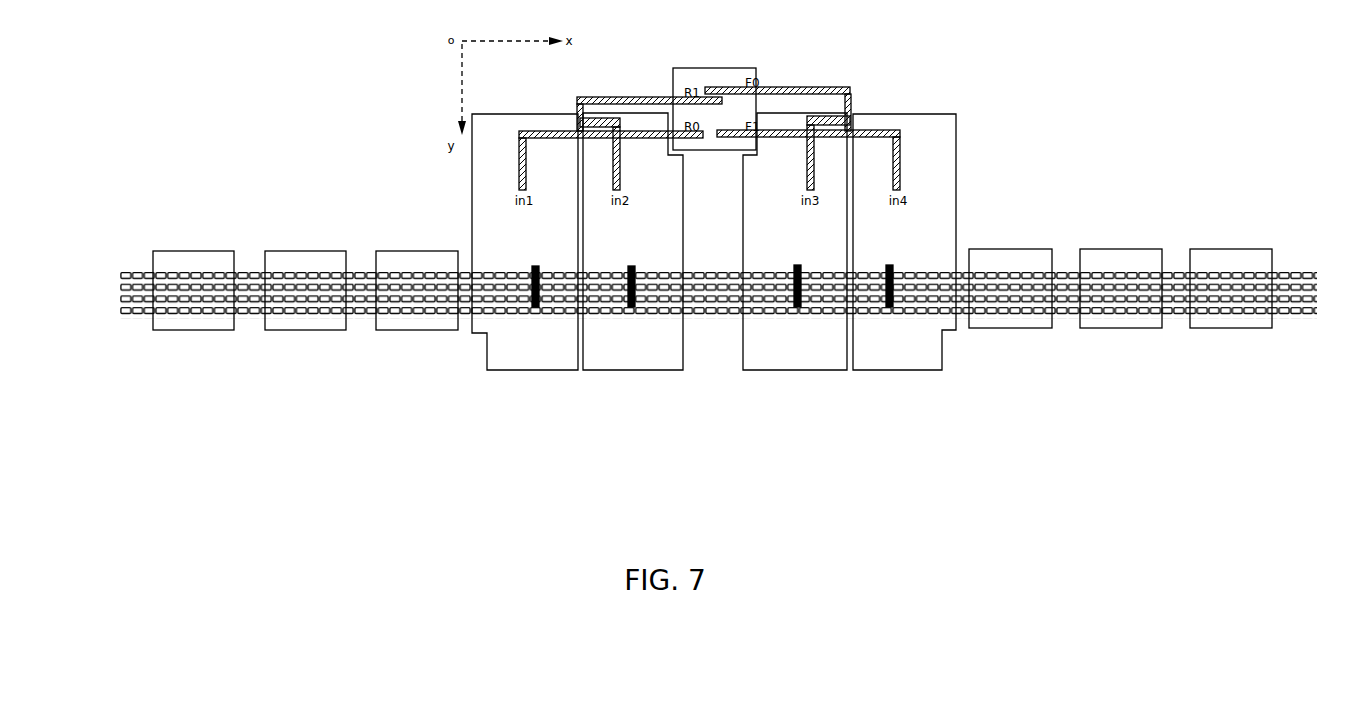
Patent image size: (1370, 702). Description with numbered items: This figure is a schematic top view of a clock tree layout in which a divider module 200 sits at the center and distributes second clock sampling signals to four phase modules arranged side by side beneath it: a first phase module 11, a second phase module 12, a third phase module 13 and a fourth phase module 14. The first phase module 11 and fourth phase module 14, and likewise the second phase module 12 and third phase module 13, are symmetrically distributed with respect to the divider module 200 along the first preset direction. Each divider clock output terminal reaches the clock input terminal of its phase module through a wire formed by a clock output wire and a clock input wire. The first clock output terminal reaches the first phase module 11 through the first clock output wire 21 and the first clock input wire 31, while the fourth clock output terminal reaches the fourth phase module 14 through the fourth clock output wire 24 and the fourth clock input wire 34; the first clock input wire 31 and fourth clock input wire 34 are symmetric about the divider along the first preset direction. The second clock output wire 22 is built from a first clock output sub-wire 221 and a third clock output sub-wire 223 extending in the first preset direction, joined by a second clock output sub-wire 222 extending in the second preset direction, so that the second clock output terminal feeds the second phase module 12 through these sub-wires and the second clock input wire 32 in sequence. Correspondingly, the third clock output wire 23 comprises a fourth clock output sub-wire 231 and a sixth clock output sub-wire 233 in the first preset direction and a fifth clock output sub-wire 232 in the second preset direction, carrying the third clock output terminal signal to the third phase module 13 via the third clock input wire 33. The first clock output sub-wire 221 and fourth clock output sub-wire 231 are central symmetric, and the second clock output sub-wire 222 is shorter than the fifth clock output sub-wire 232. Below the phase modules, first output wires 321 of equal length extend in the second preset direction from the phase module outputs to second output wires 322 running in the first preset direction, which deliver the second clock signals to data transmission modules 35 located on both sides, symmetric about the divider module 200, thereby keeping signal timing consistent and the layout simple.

The first phase module 11 is at (478, 120).
The second phase module 12 is at (633, 120).
The third phase module 13 is at (765, 120).
The fourth phase module 14 is at (933, 120).
The divider module 200 is at (747, 70).
The first clock output wire 21 is at (528, 130).
The second clock output wire 22 is at (641, 81).
The first clock output sub-wire 221 is at (602, 97).
The second clock output sub-wire 222 is at (577, 97).
The third clock output sub-wire 223 is at (560, 57).
The third clock output wire 23 is at (802, 81).
The fourth clock output sub-wire 231 is at (815, 88).
The fifth clock output sub-wire 232 is at (847, 104).
The sixth clock output sub-wire 233 is at (827, 117).
The fourth clock output wire 24 is at (891, 131).
The first clock input wire 31 is at (522, 153).
The second clock input wire 32 is at (617, 150).
The third clock input wire 33 is at (811, 147).
The fourth clock input wire 34 is at (898, 153).
The first output wire 321 is at (535, 267).
The second output wire 322 is at (240, 278).
The data transmission module 35 is at (217, 258).